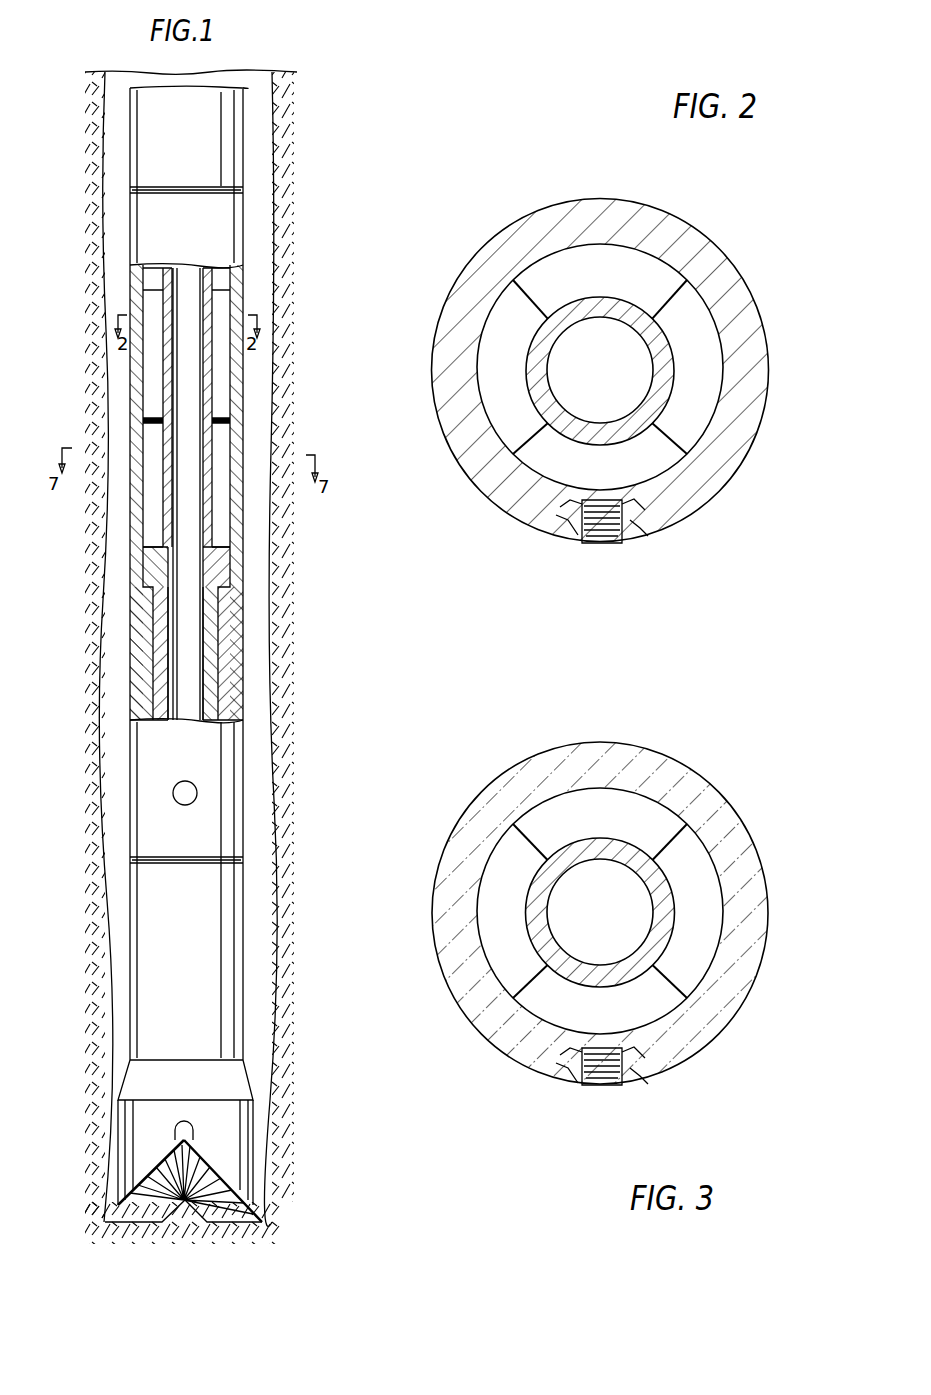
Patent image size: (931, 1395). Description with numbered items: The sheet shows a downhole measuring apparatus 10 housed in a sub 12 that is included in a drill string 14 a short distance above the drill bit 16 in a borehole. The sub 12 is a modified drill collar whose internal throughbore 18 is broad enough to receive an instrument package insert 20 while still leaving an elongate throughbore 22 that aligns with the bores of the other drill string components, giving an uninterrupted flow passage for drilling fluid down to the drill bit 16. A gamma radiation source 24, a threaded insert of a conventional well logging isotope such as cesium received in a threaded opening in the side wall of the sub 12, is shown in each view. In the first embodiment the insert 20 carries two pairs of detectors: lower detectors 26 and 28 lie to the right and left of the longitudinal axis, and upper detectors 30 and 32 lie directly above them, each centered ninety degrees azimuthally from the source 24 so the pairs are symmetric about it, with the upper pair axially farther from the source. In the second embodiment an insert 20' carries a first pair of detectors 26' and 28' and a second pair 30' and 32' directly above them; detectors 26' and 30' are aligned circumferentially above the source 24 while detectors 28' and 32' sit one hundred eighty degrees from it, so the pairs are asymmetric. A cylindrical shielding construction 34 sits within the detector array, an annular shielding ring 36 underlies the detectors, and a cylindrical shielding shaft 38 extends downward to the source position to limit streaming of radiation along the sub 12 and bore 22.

In FIG. 1, the measuring apparatus 10 is at (290, 530).
In FIG. 1, the sub 12 is at (130, 626).
In FIG. 2, the sub 12 is at (530, 508).
In FIG. 3, the sub 12 is at (517, 768).
In FIG. 1, the drill string 14 is at (130, 132).
In FIG. 1, the drill bit 16 is at (250, 1140).
In FIG. 1, the internal throughbore 18 is at (157, 673).
In FIG. 1, the instrument package insert 20 is at (228, 479).
In FIG. 2, the instrument package insert 20 is at (600, 332).
In FIG. 1, the elongate throughbore 22 is at (175, 513).
In FIG. 2, the elongate throughbore 22 is at (553, 383).
In FIG. 3, the elongate throughbore 22 is at (548, 922).
In FIG. 1, the gamma radiation source 24 is at (173, 793).
In FIG. 2, the gamma radiation source 24 is at (600, 520).
In FIG. 3, the gamma radiation source 24 is at (592, 1087).
In FIG. 1, the detector 26 is at (269, 485).
In FIG. 2, the detector 26 is at (714, 356).
In FIG. 1, the detector 28 is at (104, 485).
In FIG. 2, the detector 28 is at (485, 477).
In FIG. 1, the detector 30 is at (269, 343).
In FIG. 2, the detector 30 is at (691, 259).
In FIG. 1, the detector 32 is at (104, 343).
In FIG. 2, the detector 32 is at (470, 376).
In FIG. 1, the cylindrical shielding construction 34 is at (212, 398).
In FIG. 1, the annular shielding ring 36 is at (230, 565).
In FIG. 1, the cylindrical shielding shaft 38 is at (222, 660).
In FIG. 3, the instrument package insert 20' is at (552, 911).
In FIG. 3, the detector 26' is at (642, 1022).
In FIG. 3, the detector 28' is at (684, 788).
In FIG. 3, the detector 30' is at (675, 1049).
In FIG. 3, the detector 32' is at (583, 781).